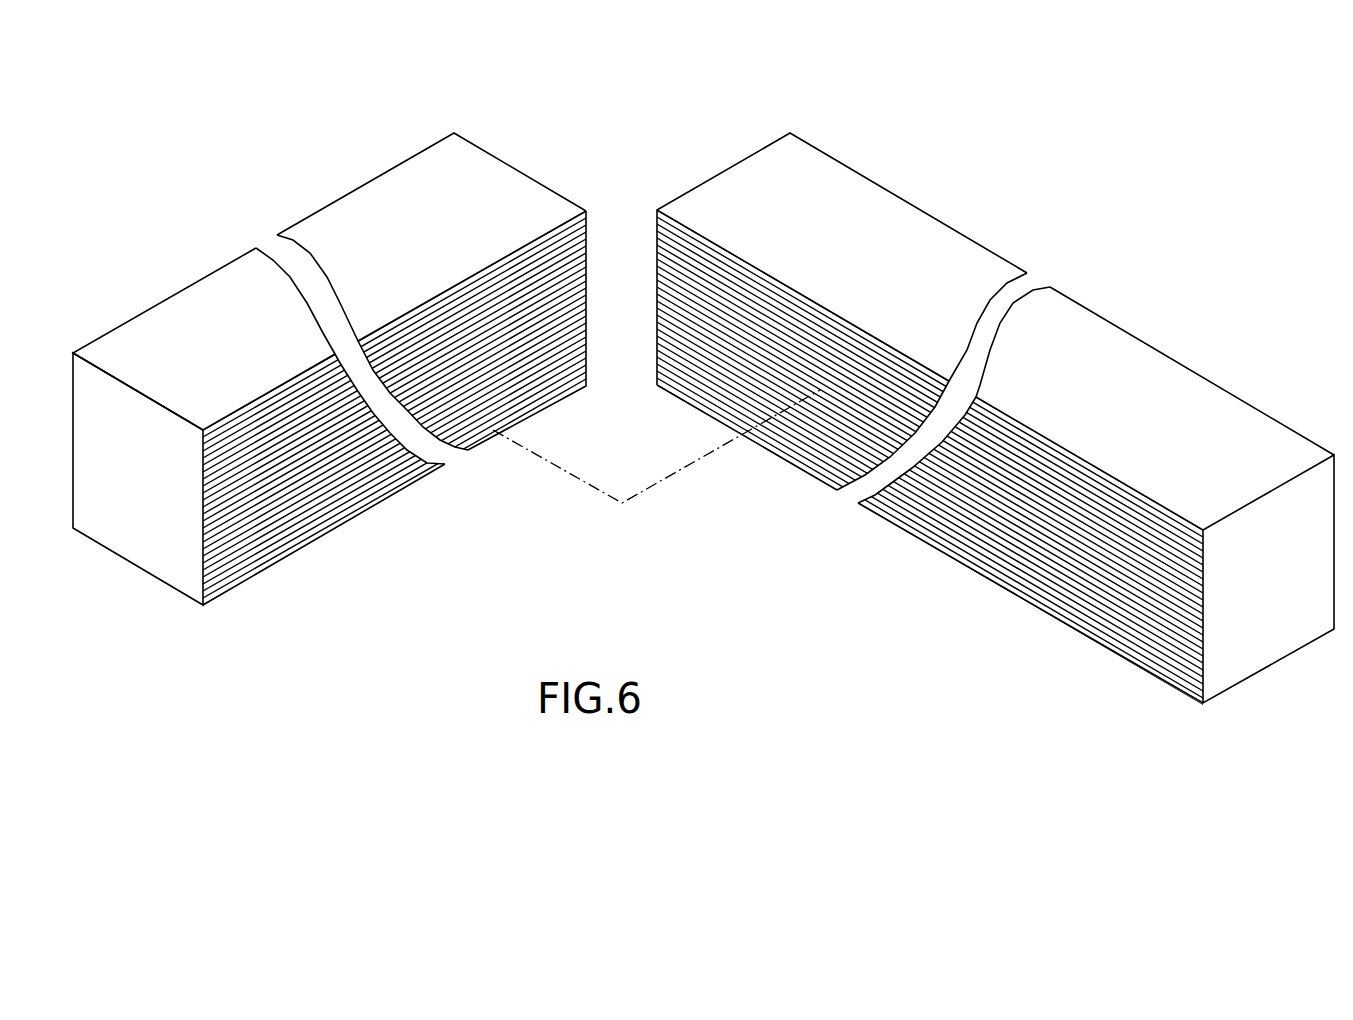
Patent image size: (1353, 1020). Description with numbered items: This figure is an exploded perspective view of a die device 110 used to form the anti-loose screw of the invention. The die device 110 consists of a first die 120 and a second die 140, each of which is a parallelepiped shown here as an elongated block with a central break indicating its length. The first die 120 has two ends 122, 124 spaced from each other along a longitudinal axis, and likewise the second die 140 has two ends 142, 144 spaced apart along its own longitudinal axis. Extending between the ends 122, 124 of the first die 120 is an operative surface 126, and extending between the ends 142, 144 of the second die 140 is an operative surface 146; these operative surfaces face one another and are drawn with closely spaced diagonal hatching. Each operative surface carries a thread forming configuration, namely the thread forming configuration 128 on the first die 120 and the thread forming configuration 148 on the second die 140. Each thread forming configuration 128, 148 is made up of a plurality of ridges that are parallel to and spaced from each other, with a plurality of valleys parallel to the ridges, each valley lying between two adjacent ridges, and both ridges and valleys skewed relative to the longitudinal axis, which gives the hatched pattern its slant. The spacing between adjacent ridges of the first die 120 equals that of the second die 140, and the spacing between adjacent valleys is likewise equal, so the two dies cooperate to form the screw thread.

The die device 110 is at (703, 399).
The first die 120 is at (339, 355).
The end of first die 122 is at (188, 562).
The end of first die 124 is at (561, 192).
The operative surface of first die 126 is at (542, 350).
The thread forming configuration of first die 128 is at (363, 472).
The second die 140 is at (986, 403).
The end of second die 142 is at (692, 190).
The end of second die 144 is at (1212, 665).
The operative surface of second die 146 is at (705, 350).
The thread forming configuration of second die 148 is at (930, 525).